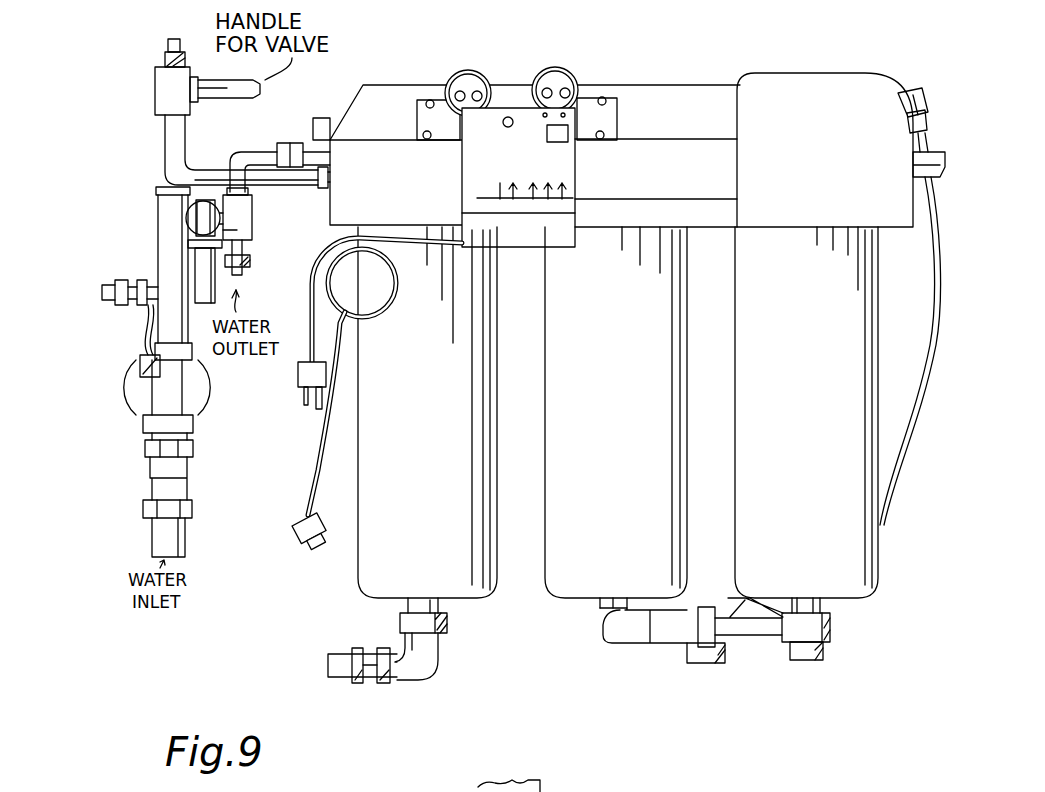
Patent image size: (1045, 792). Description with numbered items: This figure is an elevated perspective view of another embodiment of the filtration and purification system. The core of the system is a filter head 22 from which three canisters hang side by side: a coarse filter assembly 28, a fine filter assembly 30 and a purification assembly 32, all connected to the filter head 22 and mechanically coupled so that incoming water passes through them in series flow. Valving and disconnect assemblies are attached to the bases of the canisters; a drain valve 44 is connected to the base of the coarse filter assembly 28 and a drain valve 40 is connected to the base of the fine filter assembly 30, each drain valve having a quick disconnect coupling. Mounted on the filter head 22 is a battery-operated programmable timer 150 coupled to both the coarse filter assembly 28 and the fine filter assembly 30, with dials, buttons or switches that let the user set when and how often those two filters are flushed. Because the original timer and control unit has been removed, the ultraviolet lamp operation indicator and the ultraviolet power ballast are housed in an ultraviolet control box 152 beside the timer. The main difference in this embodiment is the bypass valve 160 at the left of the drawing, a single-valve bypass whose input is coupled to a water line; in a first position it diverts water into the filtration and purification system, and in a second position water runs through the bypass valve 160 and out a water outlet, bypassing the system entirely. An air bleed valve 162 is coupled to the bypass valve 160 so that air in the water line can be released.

The filter head 22 is at (696, 190).
The coarse filter assembly 28 is at (448, 482).
The fine filter assembly 30 is at (635, 482).
The purification assembly 32 is at (830, 482).
The drain valve 40 is at (597, 613).
The drain valve 44 is at (447, 623).
The programmable timer 150 is at (463, 72).
The ultraviolet control box 152 is at (802, 73).
The bypass valve 160 is at (182, 219).
The air bleed valve 162 is at (148, 106).